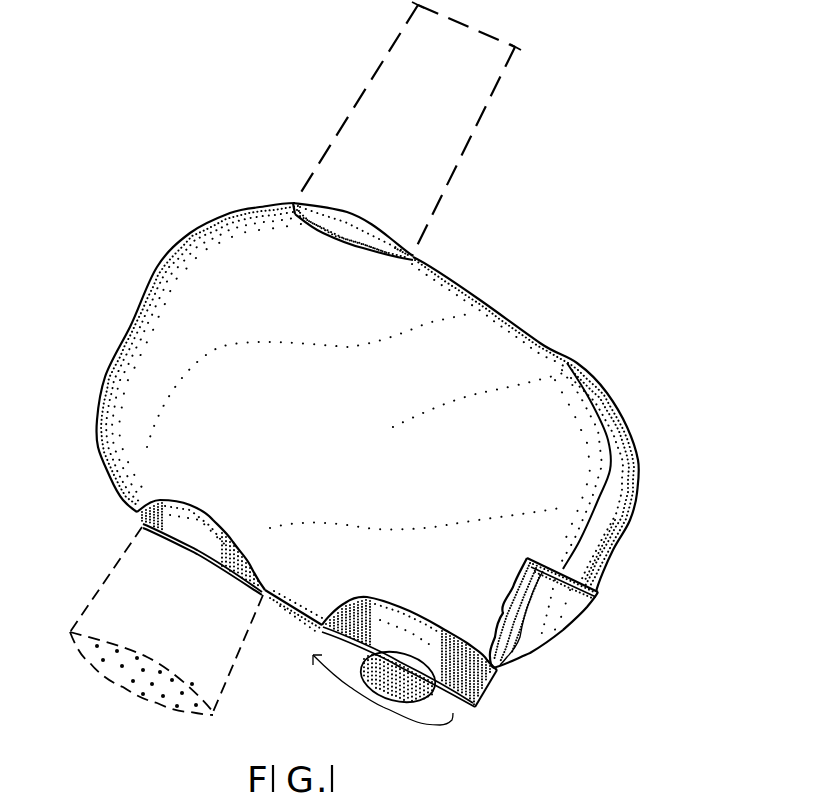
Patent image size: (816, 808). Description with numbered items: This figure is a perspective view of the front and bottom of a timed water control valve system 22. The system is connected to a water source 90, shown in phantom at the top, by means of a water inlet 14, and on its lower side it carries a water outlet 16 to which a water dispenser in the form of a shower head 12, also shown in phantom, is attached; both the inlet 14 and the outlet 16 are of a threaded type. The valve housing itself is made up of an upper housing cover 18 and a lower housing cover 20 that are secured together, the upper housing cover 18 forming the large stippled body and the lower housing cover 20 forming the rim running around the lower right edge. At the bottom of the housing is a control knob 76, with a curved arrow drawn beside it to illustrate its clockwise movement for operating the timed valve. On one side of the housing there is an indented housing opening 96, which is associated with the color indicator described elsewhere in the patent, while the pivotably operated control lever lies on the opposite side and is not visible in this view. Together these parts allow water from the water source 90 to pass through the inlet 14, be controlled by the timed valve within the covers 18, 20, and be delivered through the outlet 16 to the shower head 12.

The shower head 12 is at (124, 566).
The water inlet 14 is at (296, 204).
The water outlet 16 is at (140, 516).
The upper housing cover 18 is at (283, 464).
The lower housing cover 20 is at (640, 456).
The water control valve system 22 is at (200, 121).
The control knob 76 is at (480, 702).
The water source 90 is at (329, 150).
The indented housing opening 96 is at (596, 594).